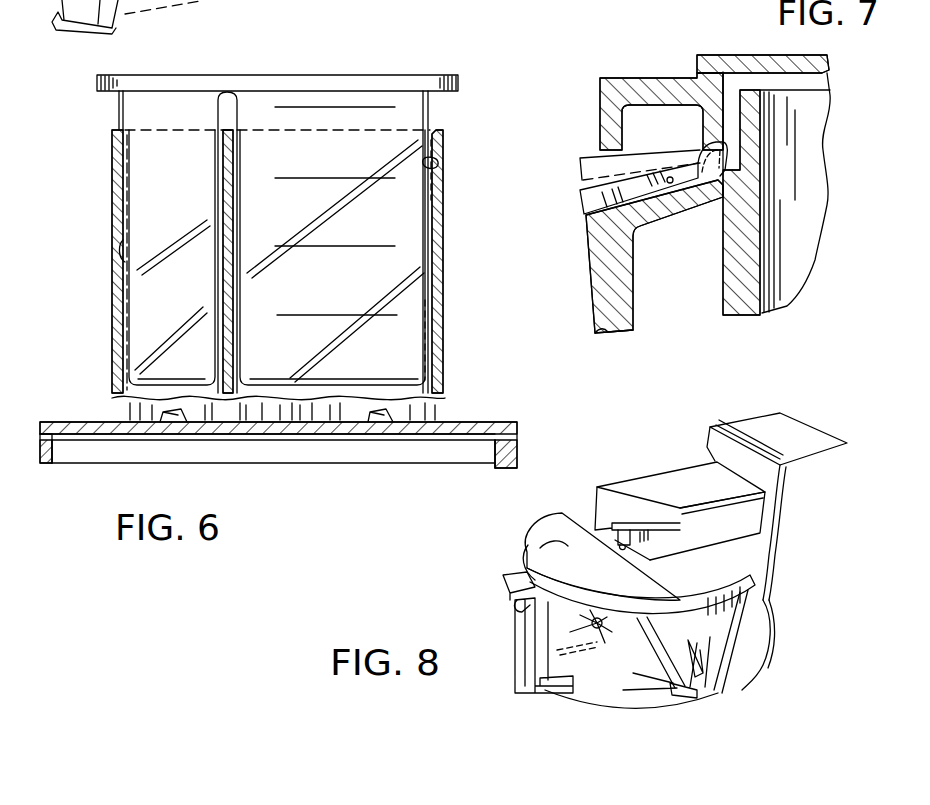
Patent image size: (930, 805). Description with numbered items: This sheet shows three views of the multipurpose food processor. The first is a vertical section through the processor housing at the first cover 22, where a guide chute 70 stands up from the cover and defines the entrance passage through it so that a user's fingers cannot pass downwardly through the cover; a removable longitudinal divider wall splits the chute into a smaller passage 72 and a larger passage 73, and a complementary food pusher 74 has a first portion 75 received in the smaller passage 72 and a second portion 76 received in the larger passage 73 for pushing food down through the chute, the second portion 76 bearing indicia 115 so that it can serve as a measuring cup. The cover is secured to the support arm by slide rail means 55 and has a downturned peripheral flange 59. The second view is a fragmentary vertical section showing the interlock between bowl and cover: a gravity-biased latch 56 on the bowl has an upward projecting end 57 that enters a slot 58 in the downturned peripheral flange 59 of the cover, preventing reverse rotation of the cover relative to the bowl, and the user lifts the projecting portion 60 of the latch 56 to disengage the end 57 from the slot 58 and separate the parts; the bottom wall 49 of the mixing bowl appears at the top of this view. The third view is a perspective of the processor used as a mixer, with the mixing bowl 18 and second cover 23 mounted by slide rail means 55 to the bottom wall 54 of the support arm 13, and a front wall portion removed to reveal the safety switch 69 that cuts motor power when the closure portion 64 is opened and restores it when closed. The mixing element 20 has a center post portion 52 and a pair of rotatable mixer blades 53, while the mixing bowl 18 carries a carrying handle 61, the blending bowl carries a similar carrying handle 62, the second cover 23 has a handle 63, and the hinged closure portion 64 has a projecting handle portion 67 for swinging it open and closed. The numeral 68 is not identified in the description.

In FIG. 8, the support arm 13 is at (662, 483).
In FIG. 8, the mixing bowl 18 is at (598, 702).
In FIG. 8, the mixing element 20 is at (686, 708).
In FIG. 6, the first cover 22 is at (485, 423).
In FIG. 8, the second cover 23 is at (575, 514).
In FIG. 7, the bottom wall 49 is at (600, 0).
In FIG. 8, the center post portion 52 is at (637, 642).
In FIG. 8, the mixer blades 53 is at (718, 677).
In FIG. 8, the bottom wall 54 is at (773, 562).
In FIG. 6, the slide rail means 55 is at (379, 424).
In FIG. 8, the slide rail means 55 is at (630, 567).
In FIG. 7, the latch 56 is at (660, 192).
In FIG. 7, the upward projecting end 57 is at (690, 147).
In FIG. 7, the slot 58 is at (724, 144).
In FIG. 6, the downturned peripheral flange 59 is at (44, 462).
In FIG. 7, the downturned peripheral flange 59 is at (802, 84).
In FIG. 8, the downturned peripheral flange 59 is at (750, 590).
In FIG. 7, the projecting portion 60 is at (580, 200).
In FIG. 8, the carrying handle 61 is at (541, 700).
In FIG. 7, the carrying handle 62 is at (603, 293).
In FIG. 8, the handle 63 is at (516, 580).
In FIG. 8, the closure portion 64 is at (548, 547).
In FIG. 7, the projecting handle portion 67 is at (702, 60).
In FIG. 8, the projecting handle portion 67 is at (527, 545).
In FIG. 8, the cover 68 is at (612, 482).
In FIG. 8, the safety switch 69 is at (652, 548).
In FIG. 6, the guide chute 70 is at (450, 264).
In FIG. 6, the smaller passage 72 is at (124, 240).
In FIG. 6, the larger passage 73 is at (438, 165).
In FIG. 6, the food pusher 74 is at (366, 74).
In FIG. 6, the first portion 75 is at (175, 108).
In FIG. 6, the second portion 76 is at (253, 108).
In FIG. 6, the indicia 115 is at (383, 108).